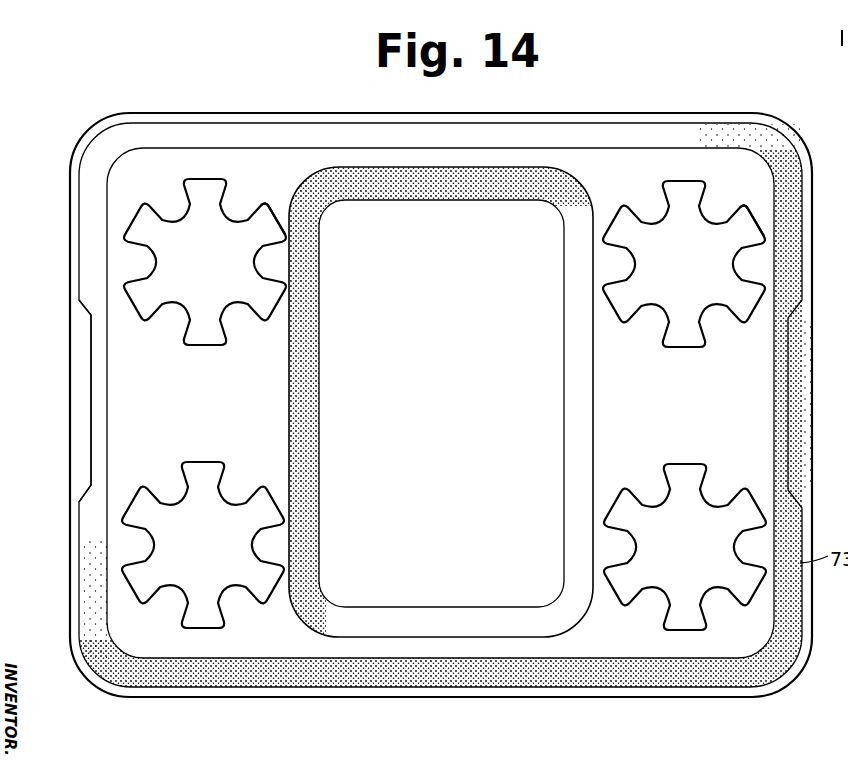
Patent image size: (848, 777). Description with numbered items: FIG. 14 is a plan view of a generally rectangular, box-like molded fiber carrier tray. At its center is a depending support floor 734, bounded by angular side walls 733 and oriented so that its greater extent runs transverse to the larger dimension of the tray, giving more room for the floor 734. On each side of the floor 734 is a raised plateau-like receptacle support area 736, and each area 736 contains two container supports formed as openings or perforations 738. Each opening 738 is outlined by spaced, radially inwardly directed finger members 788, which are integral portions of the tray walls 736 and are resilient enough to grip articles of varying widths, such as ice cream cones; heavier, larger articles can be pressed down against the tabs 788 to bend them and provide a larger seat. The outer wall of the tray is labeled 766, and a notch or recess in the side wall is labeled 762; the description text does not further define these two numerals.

The tray side wall 766 is at (70, 179).
The side wall notch 762 is at (80, 406).
The raised plateau-like receptacle support area 736 is at (215, 421).
The perforations 738 is at (220, 290).
The finger members 788 is at (237, 214).
The angular side walls 733 is at (573, 494).
The support floor 734 is at (458, 381).